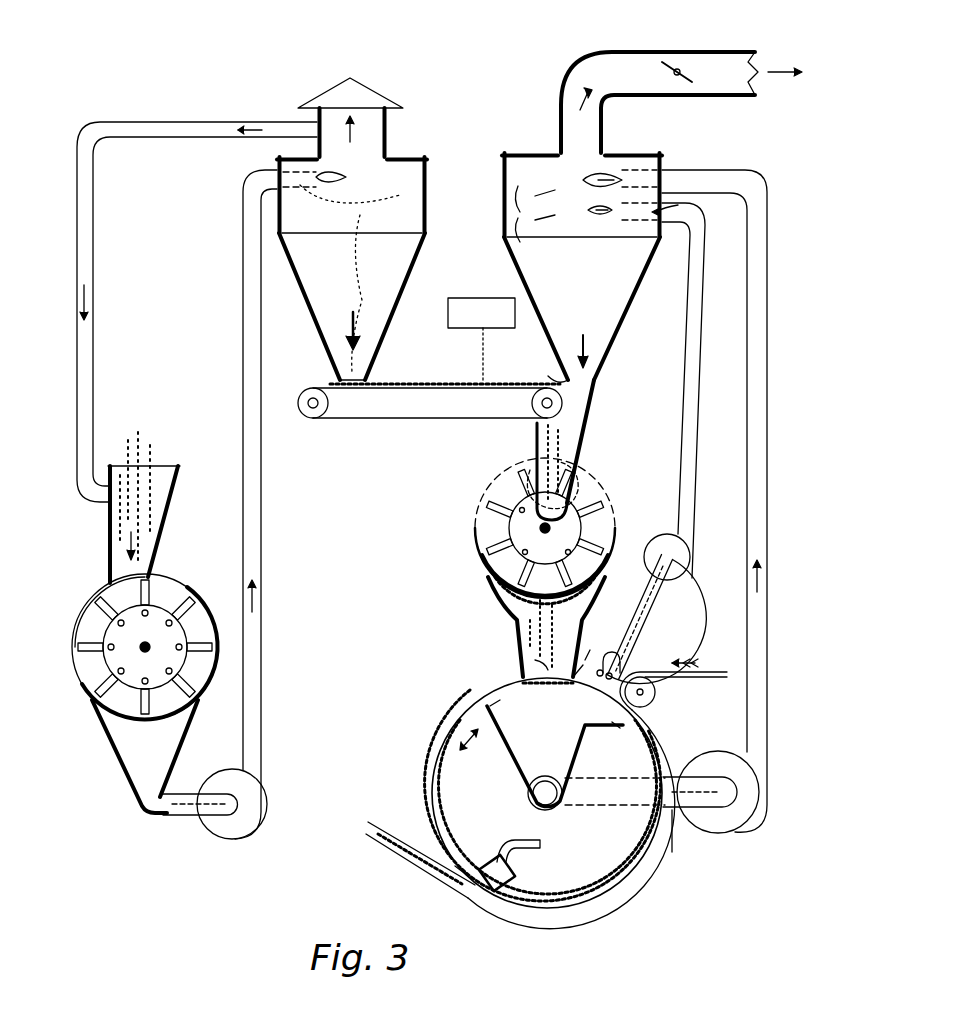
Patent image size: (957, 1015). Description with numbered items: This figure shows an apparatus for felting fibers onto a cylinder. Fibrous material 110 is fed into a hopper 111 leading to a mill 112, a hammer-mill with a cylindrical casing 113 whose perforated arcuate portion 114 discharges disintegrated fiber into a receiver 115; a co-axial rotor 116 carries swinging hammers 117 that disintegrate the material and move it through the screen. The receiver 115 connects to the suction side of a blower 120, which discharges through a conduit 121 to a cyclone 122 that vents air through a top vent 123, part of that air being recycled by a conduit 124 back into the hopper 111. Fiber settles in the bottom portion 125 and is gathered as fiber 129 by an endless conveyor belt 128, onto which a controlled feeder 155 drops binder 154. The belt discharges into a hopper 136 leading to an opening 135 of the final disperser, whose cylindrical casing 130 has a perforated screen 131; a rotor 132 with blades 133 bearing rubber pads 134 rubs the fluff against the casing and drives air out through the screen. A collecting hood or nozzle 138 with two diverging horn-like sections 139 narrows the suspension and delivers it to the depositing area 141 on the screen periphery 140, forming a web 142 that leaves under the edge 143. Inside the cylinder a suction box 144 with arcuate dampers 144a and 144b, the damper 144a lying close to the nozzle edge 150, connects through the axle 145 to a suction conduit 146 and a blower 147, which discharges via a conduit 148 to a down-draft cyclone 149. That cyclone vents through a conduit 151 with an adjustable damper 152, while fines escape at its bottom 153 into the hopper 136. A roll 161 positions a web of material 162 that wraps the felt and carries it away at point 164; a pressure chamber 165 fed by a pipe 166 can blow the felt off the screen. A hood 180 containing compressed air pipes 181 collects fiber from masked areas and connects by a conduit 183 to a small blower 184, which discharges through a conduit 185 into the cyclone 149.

The fibrous material 110 is at (138, 442).
The hopper 111 is at (175, 512).
The mill 112 is at (78, 605).
The cylindrical casing 113 is at (80, 684).
The perforated screen portion 114 is at (112, 724).
The receiver 115 is at (120, 770).
The rotor 116 is at (178, 620).
The swinging hammers 117 is at (103, 592).
The blower 120 is at (263, 797).
The conduit 121 is at (262, 335).
The cyclone 122 is at (413, 268).
The top vent 123 is at (389, 131).
The conduit 124 is at (176, 126).
The bottom portion 125 is at (356, 372).
The endless conveyor belt 128 is at (313, 388).
The fiber 129 is at (400, 386).
The cylindrical casing 130 is at (476, 516).
The screen 131 is at (498, 597).
The rotor 132 is at (576, 519).
The blades 133 is at (503, 500).
The rubber pads 134 is at (508, 474).
The opening 135 is at (578, 508).
The hopper 136 is at (596, 450).
The collecting hood or nozzle 138 is at (512, 635).
The diverging horn-like sections 139 is at (505, 590).
The screen periphery 140 is at (438, 775).
The depositing area 141 is at (546, 662).
The web 142 is at (575, 690).
The edge 143 is at (584, 662).
The suction box 144 is at (578, 768).
The arcuate damper 144a is at (498, 702).
The arcuate damper 144b is at (614, 722).
The axle 145 is at (530, 797).
The suction conduit 146 is at (697, 824).
The blower 147 is at (745, 818).
The conduit 148 is at (769, 432).
The down-draft cyclone 149 is at (624, 318).
The nozzle edge 150 is at (522, 677).
The conduit 151 is at (606, 127).
The adjustable damper 152 is at (678, 68).
The bottom 153 is at (598, 360).
The binder 154 is at (486, 354).
The controlled feeder 155 is at (476, 298).
The roll 161 is at (656, 694).
The web of material 162 is at (708, 670).
The felt leaving point 164 is at (462, 868).
The pressure chamber 165 is at (515, 876).
The pipe 166 is at (542, 845).
The hood 180 is at (622, 660).
The compressed air pipes 181 is at (618, 670).
The conduit 183 is at (654, 603).
The small blower 184 is at (680, 566).
The conduit 185 is at (694, 353).